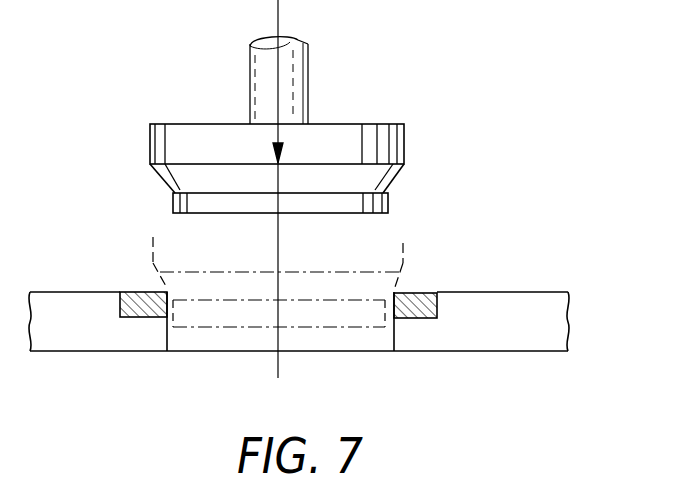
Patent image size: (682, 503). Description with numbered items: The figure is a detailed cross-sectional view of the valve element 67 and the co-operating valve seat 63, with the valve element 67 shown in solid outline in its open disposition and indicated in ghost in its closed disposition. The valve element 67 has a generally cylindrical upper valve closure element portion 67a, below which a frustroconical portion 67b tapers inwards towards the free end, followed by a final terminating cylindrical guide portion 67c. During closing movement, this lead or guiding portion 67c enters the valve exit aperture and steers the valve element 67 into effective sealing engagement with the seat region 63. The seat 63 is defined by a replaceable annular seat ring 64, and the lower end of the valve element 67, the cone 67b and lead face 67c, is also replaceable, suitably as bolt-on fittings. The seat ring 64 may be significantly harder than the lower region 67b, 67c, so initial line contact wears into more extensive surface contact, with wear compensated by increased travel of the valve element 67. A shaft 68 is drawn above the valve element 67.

The valve seat 63 is at (428, 279).
The seat ring 64 is at (127, 317).
The valve element 67 is at (324, 135).
The upper valve closure element portion 67a is at (405, 140).
The frustroconical portion 67b is at (387, 183).
The cylindrical guide portion 67c is at (387, 203).
The shaft 68 is at (302, 77).